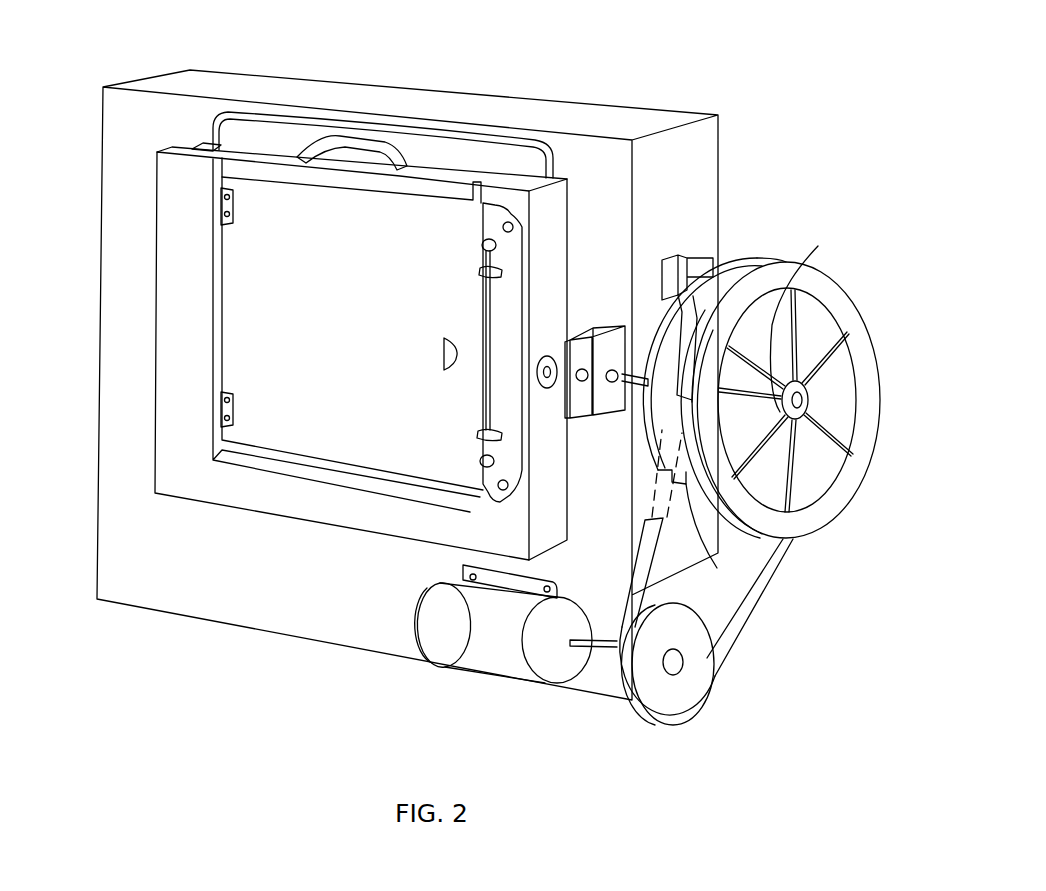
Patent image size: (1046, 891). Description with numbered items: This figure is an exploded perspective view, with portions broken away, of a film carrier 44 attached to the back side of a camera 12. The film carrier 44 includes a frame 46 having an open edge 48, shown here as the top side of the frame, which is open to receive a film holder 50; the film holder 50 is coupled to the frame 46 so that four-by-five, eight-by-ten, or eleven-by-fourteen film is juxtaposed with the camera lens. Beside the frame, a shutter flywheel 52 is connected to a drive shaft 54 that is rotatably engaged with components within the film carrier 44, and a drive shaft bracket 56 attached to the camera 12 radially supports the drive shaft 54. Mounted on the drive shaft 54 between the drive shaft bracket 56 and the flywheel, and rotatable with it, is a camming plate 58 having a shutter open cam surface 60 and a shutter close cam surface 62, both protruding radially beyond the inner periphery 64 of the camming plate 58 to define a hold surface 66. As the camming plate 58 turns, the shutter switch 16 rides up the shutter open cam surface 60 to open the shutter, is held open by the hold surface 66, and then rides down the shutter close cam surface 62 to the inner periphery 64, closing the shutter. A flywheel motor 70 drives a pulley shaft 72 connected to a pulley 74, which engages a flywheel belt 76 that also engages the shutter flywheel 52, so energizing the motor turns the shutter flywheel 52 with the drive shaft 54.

The camera 12 is at (718, 152).
The shutter switch 16 is at (708, 257).
The film carrier 44 is at (128, 358).
The frame 46 is at (155, 280).
The open edge 48 is at (197, 143).
The film holder 50 is at (517, 147).
The shutter flywheel 52 is at (855, 308).
The drive shaft 54 is at (755, 412).
The drive shaft bracket 56 is at (618, 327).
The camming plate 58 is at (660, 422).
The shutter open cam surface 60 is at (715, 541).
The shutter close cam surface 62 is at (681, 310).
The inner periphery 64 is at (643, 426).
The hold surface 66 is at (806, 317).
The flywheel motor 70 is at (477, 657).
The pulley shaft 72 is at (600, 658).
The pulley 74 is at (677, 712).
The flywheel belt 76 is at (740, 643).